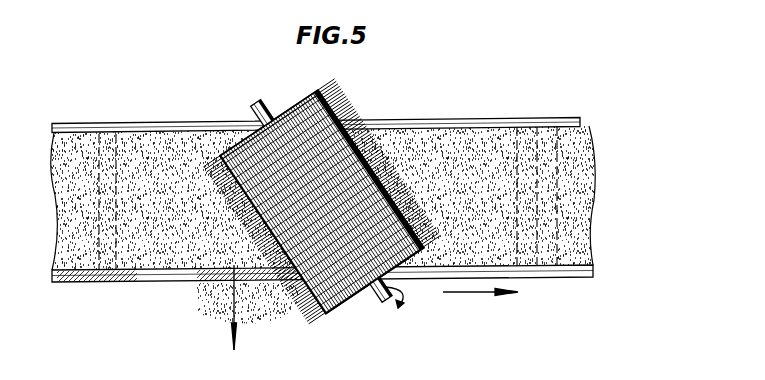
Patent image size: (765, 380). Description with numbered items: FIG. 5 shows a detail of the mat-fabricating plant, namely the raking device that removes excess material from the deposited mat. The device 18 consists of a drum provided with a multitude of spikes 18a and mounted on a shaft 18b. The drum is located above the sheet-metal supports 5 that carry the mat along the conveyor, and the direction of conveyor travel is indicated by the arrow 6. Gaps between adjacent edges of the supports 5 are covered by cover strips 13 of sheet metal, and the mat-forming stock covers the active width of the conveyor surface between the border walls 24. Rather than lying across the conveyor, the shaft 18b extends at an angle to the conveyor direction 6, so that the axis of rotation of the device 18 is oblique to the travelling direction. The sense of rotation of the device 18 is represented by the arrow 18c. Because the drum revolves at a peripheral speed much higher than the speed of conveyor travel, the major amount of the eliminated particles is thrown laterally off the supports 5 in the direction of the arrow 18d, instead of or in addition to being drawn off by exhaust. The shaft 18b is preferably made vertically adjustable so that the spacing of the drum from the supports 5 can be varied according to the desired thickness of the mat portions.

The supports 5 is at (66, 143).
The direction of conveyor travel 6 is at (467, 293).
The cover strips 13 is at (569, 197).
The border walls 24 is at (460, 120).
The spike drum 18 is at (298, 108).
The spikes 18a is at (347, 116).
The shaft 18b is at (246, 103).
The arrow indicating sense of rotation 18c is at (381, 306).
The arrow indicating direction of thrown particles 18d is at (237, 322).